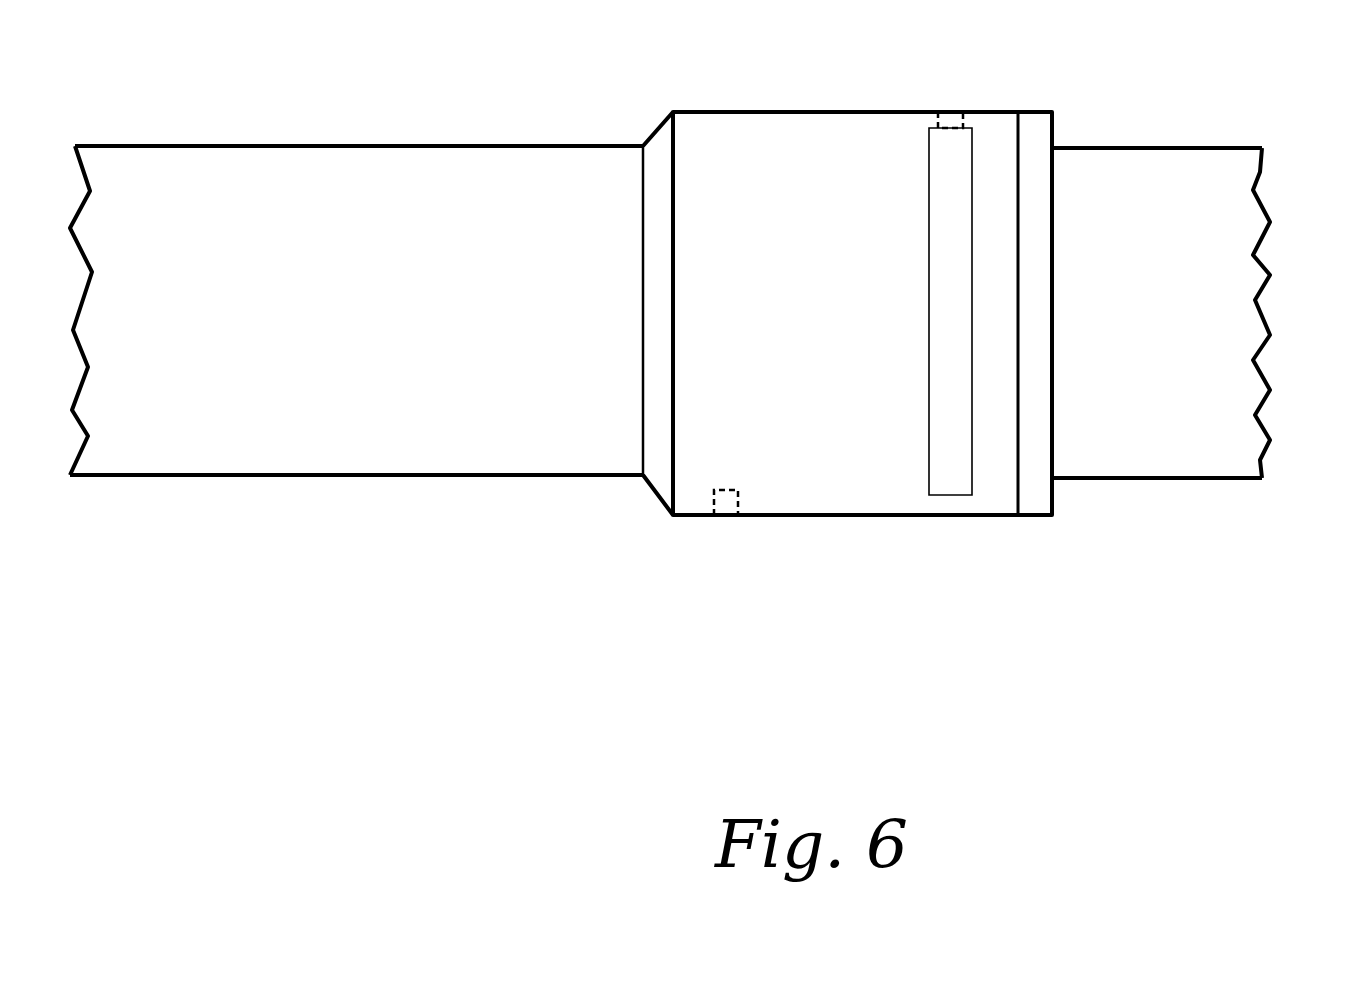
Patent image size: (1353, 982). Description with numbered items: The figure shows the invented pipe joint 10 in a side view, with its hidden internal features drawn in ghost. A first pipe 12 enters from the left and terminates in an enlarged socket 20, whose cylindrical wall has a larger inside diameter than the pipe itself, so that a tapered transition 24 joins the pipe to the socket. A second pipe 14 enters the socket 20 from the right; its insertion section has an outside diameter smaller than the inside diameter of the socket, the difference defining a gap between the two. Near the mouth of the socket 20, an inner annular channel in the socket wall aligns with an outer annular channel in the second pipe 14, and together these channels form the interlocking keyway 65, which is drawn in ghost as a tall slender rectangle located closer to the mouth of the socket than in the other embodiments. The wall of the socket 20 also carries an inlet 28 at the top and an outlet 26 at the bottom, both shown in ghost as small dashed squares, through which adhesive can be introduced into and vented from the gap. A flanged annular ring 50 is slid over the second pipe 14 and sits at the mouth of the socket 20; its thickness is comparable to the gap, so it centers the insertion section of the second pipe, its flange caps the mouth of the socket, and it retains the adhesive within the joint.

The pipe joint 10 is at (1186, 133).
The first pipe 12 is at (280, 313).
The second pipe 14 is at (1213, 324).
The socket 20 is at (832, 334).
The tapered transition 24 is at (650, 485).
The outlet 26 is at (727, 515).
The inlet 28 is at (953, 122).
The flanged annular ring 50 is at (1033, 487).
The interlocking keyway 65 is at (947, 422).